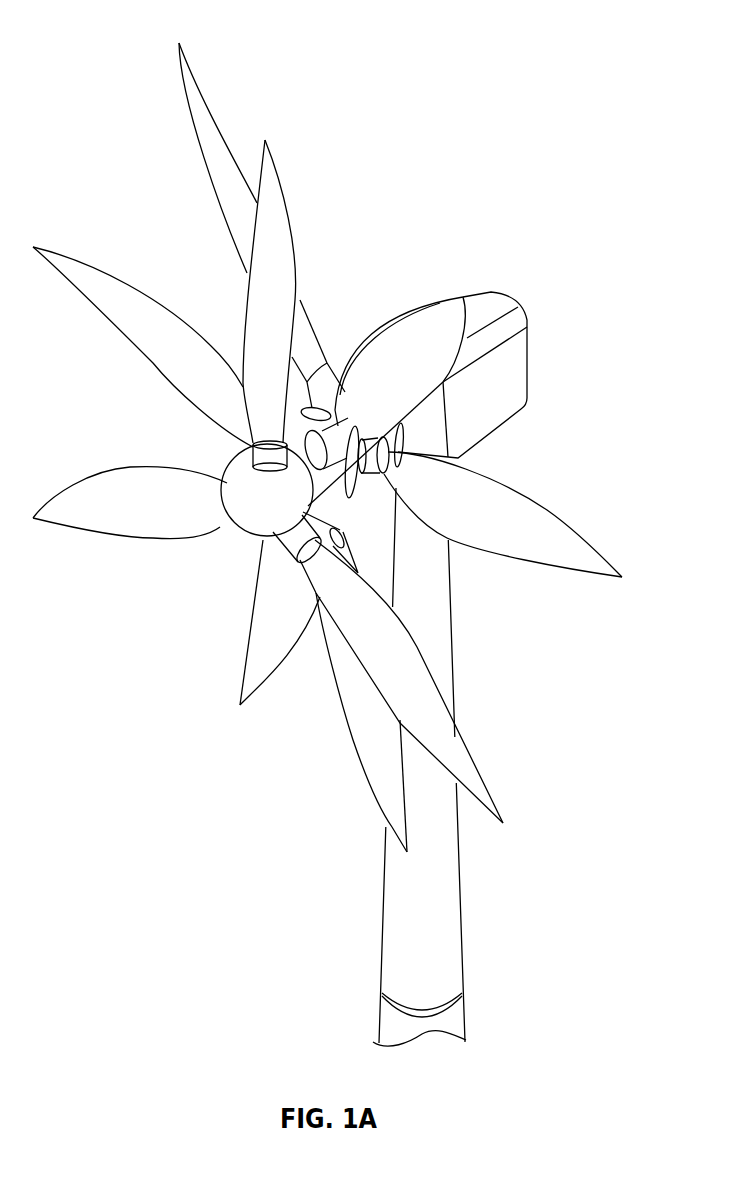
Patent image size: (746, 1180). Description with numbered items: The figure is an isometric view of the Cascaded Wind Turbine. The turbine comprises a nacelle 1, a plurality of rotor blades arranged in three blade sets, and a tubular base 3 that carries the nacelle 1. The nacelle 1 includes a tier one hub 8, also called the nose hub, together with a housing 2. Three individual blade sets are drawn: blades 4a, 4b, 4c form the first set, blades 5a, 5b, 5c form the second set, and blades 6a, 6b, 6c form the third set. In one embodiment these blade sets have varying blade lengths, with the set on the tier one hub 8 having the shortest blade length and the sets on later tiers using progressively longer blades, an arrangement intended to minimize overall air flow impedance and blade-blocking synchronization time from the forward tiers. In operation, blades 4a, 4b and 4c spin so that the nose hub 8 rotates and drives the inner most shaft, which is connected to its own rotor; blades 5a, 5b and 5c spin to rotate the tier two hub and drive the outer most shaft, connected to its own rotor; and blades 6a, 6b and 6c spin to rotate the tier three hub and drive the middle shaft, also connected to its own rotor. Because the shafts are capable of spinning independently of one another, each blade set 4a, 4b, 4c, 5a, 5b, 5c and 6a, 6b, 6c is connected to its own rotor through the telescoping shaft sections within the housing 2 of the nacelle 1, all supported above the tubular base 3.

The nacelle 1 is at (446, 301).
The housing 2 is at (461, 425).
The tubular base 3 is at (447, 878).
The rotor blade 4a is at (126, 509).
The rotor blade 4b is at (448, 742).
The rotor blade 4c is at (261, 309).
The rotor blade 5a is at (147, 334).
The rotor blade 5b is at (382, 769).
The rotor blade 5c is at (417, 350).
The rotor blade 6a is at (215, 156).
The rotor blade 6b is at (548, 518).
The rotor blade 6c is at (256, 666).
The tier one hub 8 is at (249, 476).